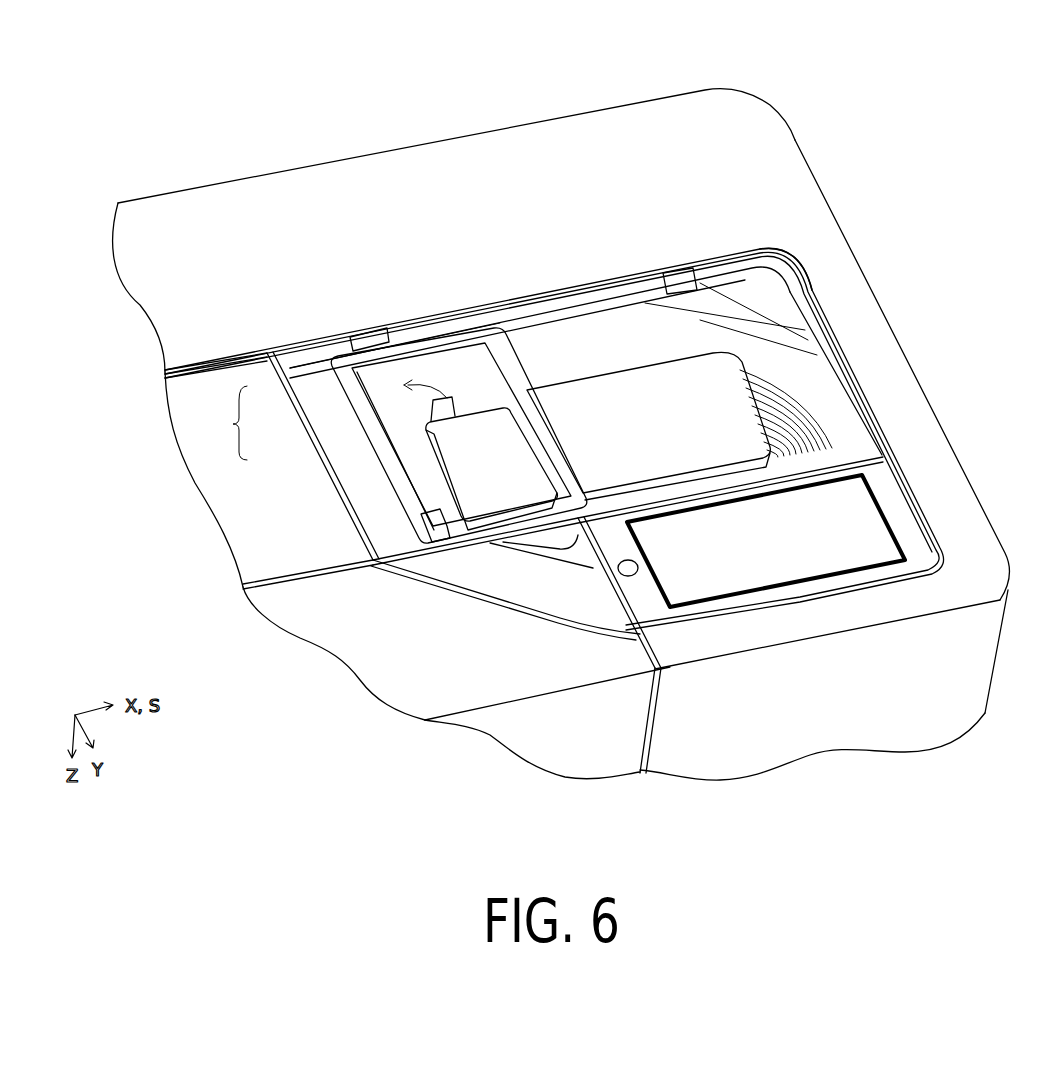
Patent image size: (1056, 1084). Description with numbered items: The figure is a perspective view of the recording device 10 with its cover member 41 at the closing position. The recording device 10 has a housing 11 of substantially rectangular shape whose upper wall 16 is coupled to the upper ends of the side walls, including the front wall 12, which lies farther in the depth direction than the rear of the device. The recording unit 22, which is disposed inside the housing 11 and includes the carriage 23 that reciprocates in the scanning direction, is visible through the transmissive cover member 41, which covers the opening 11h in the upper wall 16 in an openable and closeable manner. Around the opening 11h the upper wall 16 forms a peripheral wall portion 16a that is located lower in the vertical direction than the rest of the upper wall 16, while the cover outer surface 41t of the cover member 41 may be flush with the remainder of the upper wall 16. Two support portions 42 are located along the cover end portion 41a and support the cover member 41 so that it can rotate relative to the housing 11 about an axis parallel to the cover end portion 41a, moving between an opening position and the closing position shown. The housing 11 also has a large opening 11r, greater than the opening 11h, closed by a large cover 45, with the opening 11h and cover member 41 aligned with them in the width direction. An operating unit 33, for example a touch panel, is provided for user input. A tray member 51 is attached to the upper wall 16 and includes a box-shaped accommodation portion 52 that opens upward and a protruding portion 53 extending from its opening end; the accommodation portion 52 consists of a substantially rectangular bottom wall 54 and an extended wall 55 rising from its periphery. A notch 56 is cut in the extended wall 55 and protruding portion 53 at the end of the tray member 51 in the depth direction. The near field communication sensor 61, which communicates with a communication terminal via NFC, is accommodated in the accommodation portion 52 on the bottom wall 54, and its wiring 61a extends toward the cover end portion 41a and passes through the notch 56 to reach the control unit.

The recording device 10 is at (574, 418).
The housing 11 is at (795, 142).
The large opening 11r is at (192, 370).
The opening 11h is at (784, 376).
The front wall 12 is at (990, 636).
The upper wall 16 is at (418, 148).
The peripheral wall portion 16a is at (848, 403).
The recording unit 22 is at (632, 357).
The carriage 23 is at (703, 457).
The operating unit 33 is at (903, 512).
The cover member 41 is at (597, 313).
The cover end portion 41a is at (473, 312).
The cover outer surface 41t is at (782, 278).
The support portion 42 is at (367, 330).
The large cover 45 is at (247, 362).
The tray member 51 is at (512, 332).
The accommodation portion 52 is at (352, 456).
The protruding portion 53 is at (423, 345).
The bottom wall 54 is at (393, 430).
The extended wall 55 is at (367, 373).
The notch 56 is at (467, 540).
The near field communication sensor 61 is at (538, 420).
The wiring 61a is at (440, 380).